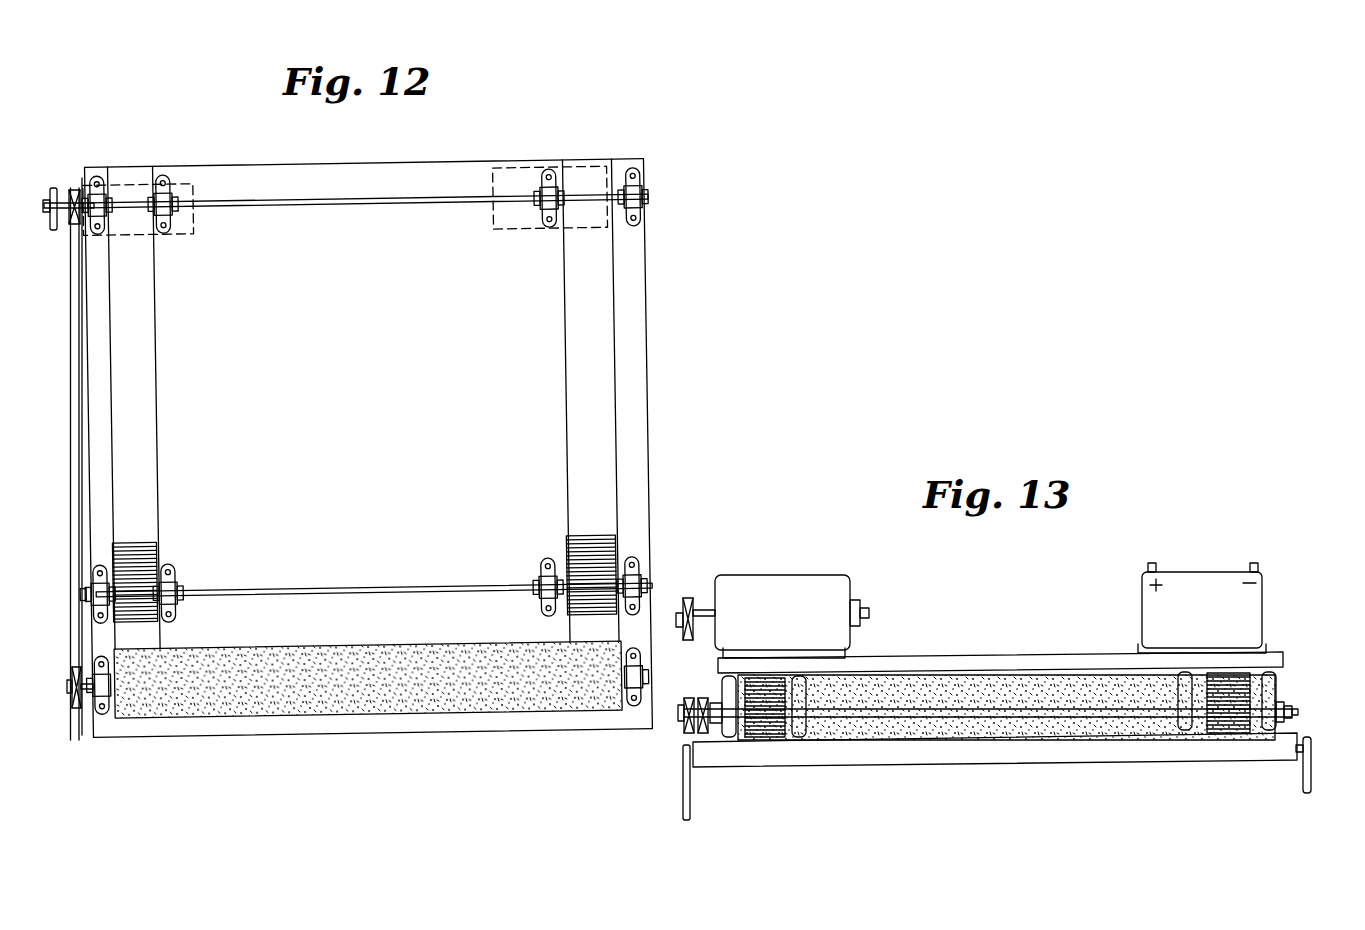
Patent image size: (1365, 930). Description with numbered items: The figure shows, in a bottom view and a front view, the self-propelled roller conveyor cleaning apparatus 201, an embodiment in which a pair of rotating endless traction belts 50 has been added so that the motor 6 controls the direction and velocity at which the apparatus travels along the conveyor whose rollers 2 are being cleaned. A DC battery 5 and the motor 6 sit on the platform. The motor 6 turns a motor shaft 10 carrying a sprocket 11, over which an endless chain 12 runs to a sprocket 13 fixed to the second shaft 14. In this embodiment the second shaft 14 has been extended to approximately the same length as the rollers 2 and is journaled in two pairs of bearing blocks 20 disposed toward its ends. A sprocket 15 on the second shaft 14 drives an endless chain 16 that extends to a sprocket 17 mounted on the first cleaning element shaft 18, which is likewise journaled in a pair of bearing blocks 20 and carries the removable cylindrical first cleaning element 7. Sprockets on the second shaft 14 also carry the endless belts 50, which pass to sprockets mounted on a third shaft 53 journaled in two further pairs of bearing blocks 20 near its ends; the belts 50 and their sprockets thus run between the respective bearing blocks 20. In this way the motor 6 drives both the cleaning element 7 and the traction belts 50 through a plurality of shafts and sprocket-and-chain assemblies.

In FIG. 13, the rollers 2 is at (1048, 758).
In FIG. 12, the DC battery 5 is at (512, 228).
In FIG. 13, the DC battery 5 is at (1205, 571).
In FIG. 12, the motor 6 is at (193, 180).
In FIG. 13, the motor 6 is at (806, 575).
In FIG. 12, the first cleaning element 7 is at (290, 718).
In FIG. 13, the first cleaning element 7 is at (1006, 707).
In FIG. 13, the motor shaft 10 is at (870, 614).
In FIG. 13, the sprocket 11 is at (688, 598).
In FIG. 13, the endless chain 12 is at (700, 735).
In FIG. 12, the sprocket 13 is at (53, 190).
In FIG. 13, the sprocket 13 is at (684, 762).
In FIG. 12, the second shaft 14 is at (45, 209).
In FIG. 13, the second shaft 14 is at (1299, 712).
In FIG. 12, the sprocket 15 is at (78, 188).
In FIG. 13, the sprocket 15 is at (688, 698).
In FIG. 12, the endless chain 16 is at (70, 400).
In FIG. 12, the sprocket 17 is at (75, 710).
In FIG. 12, the first cleaning element shaft 18 is at (67, 687).
In FIG. 12, the bearing blocks 20 is at (164, 175).
In FIG. 13, the bearing blocks 20 is at (728, 738).
In FIG. 12, the endless traction belts 50 is at (567, 410).
In FIG. 13, the endless traction belts 50 is at (765, 738).
In FIG. 12, the third shaft 53 is at (90, 597).
In FIG. 12, the roller conveyor cleaning apparatus 201 is at (664, 344).
In FIG. 13, the roller conveyor cleaning apparatus 201 is at (995, 655).